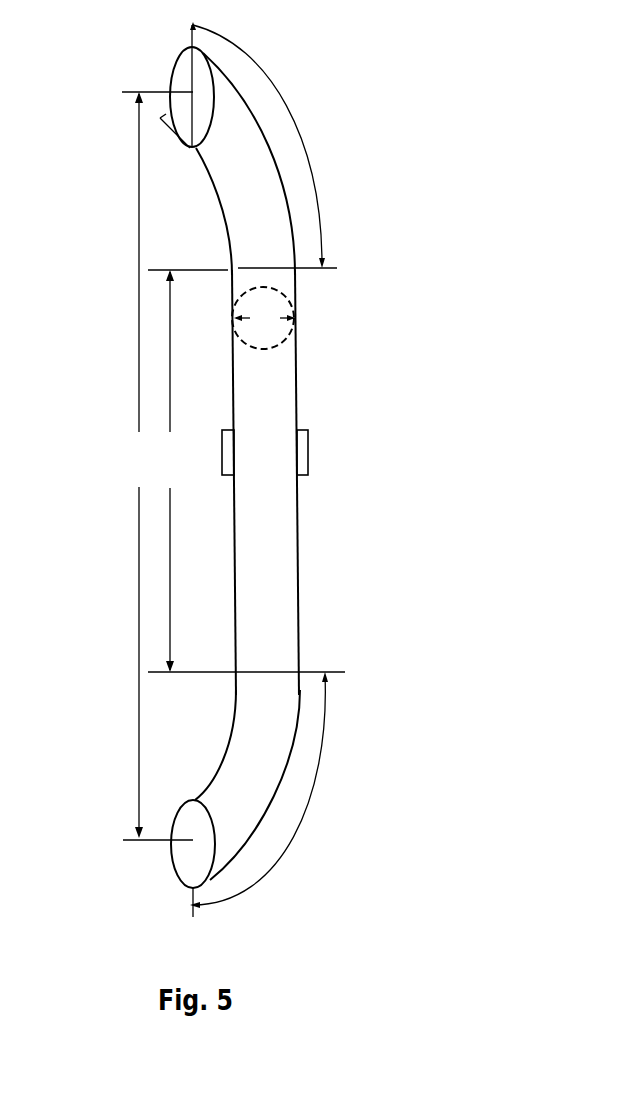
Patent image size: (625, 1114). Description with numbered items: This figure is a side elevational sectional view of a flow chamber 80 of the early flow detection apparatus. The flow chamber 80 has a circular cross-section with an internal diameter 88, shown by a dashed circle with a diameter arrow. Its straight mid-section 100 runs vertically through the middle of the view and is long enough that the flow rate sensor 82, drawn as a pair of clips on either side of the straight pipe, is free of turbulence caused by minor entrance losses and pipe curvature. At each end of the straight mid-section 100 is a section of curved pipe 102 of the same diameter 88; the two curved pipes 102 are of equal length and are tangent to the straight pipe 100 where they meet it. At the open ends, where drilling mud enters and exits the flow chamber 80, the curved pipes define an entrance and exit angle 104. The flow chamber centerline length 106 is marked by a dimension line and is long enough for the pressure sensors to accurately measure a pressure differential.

The flow chamber 80 is at (282, 469).
The flow rate sensor 82 is at (308, 452).
The internal diameter 88 is at (265, 318).
The straight mid-section 100 is at (275, 380).
The curved pipe 102 is at (235, 165).
The entrance and exit angle 104 is at (176, 110).
The flow chamber centerline length 106 is at (246, 471).